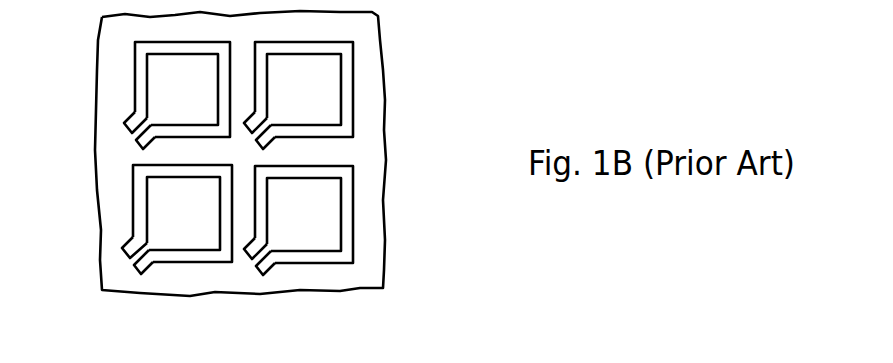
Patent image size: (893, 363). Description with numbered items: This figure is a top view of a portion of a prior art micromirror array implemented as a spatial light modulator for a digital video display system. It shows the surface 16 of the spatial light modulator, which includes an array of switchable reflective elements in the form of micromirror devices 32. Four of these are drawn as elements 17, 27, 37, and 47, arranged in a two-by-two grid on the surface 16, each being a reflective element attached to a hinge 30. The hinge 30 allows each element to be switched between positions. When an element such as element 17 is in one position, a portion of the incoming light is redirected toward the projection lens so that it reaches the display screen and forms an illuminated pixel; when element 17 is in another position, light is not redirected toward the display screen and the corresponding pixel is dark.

The surface 16 is at (372, 136).
The reflective element 17 is at (133, 114).
The reflective element 27 is at (310, 97).
The reflective element 37 is at (195, 226).
The reflective element 47 is at (312, 227).
The hinge 30 is at (123, 141).
The micromirror devices 32 is at (148, 68).